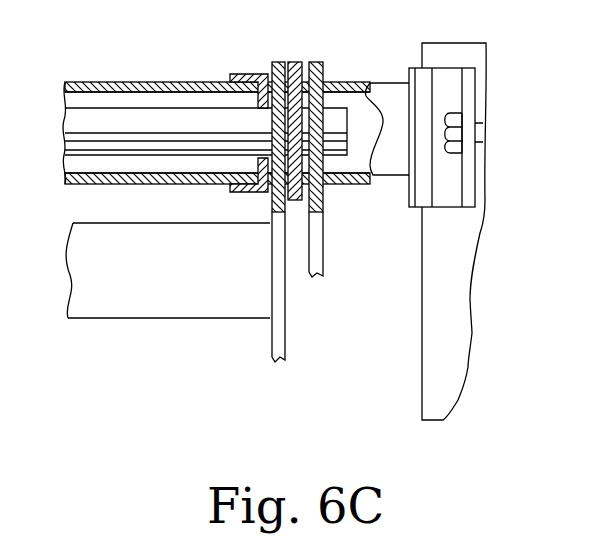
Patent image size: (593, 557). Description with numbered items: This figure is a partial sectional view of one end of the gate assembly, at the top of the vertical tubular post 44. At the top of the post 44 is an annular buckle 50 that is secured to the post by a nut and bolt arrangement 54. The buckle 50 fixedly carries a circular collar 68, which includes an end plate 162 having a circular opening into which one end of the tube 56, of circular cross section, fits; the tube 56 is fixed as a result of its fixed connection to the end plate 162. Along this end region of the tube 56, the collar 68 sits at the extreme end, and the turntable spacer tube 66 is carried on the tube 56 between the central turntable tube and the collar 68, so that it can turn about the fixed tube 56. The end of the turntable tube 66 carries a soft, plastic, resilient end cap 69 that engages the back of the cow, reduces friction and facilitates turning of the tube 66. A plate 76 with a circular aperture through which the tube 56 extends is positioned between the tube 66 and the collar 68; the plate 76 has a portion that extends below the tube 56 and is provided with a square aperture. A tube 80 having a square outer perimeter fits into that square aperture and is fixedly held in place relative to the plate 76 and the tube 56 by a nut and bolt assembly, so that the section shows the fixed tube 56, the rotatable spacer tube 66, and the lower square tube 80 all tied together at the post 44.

The tubular post 44 is at (458, 292).
The annular buckle 50 is at (445, 80).
The nut and bolt arrangement 54 is at (482, 131).
The tube 56 is at (185, 115).
The turntable spacer tube 66 is at (110, 88).
The circular collar 68 is at (393, 93).
The end cap 69 is at (240, 77).
The plate 76 is at (285, 338).
The tube 80 is at (153, 297).
The end plate 162 is at (300, 62).